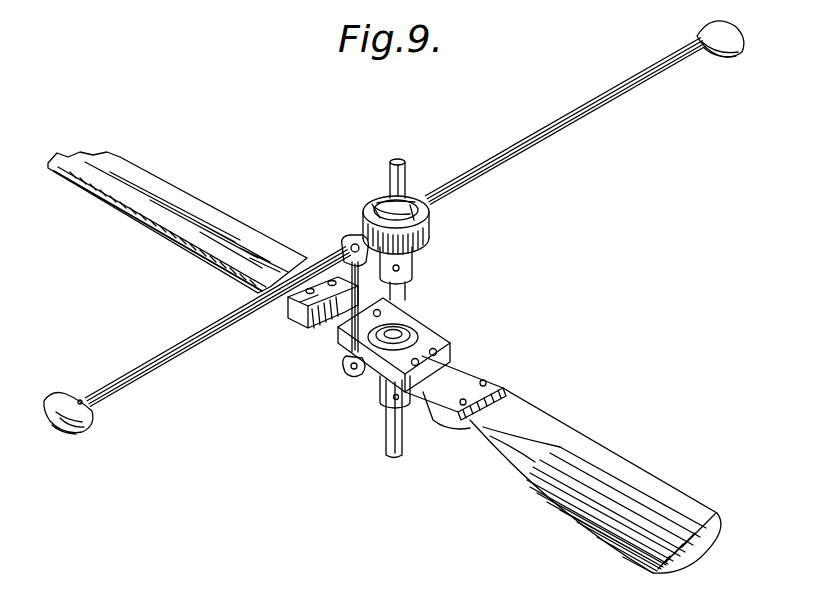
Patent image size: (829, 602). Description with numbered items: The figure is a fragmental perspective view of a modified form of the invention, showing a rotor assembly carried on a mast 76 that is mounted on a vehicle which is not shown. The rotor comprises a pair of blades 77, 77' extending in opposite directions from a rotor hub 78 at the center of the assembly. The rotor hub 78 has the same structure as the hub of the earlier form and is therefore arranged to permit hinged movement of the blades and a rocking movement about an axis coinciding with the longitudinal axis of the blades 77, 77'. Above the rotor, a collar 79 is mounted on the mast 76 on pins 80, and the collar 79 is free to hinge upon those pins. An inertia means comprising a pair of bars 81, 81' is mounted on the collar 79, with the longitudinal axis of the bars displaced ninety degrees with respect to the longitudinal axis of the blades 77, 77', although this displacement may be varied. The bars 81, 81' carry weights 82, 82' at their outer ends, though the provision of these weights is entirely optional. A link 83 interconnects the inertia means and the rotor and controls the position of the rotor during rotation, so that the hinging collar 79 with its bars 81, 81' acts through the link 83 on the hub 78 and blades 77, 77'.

The mast 76 is at (406, 300).
The blade 77 is at (177, 222).
The blade 77' is at (595, 480).
The rotor hub 78 is at (430, 340).
The collar 79 is at (430, 224).
The pins 80 is at (375, 206).
The bar 81 is at (218, 327).
The bar 81' is at (566, 121).
The weight 82 is at (68, 430).
The weight 82' is at (721, 61).
The link 83 is at (326, 318).